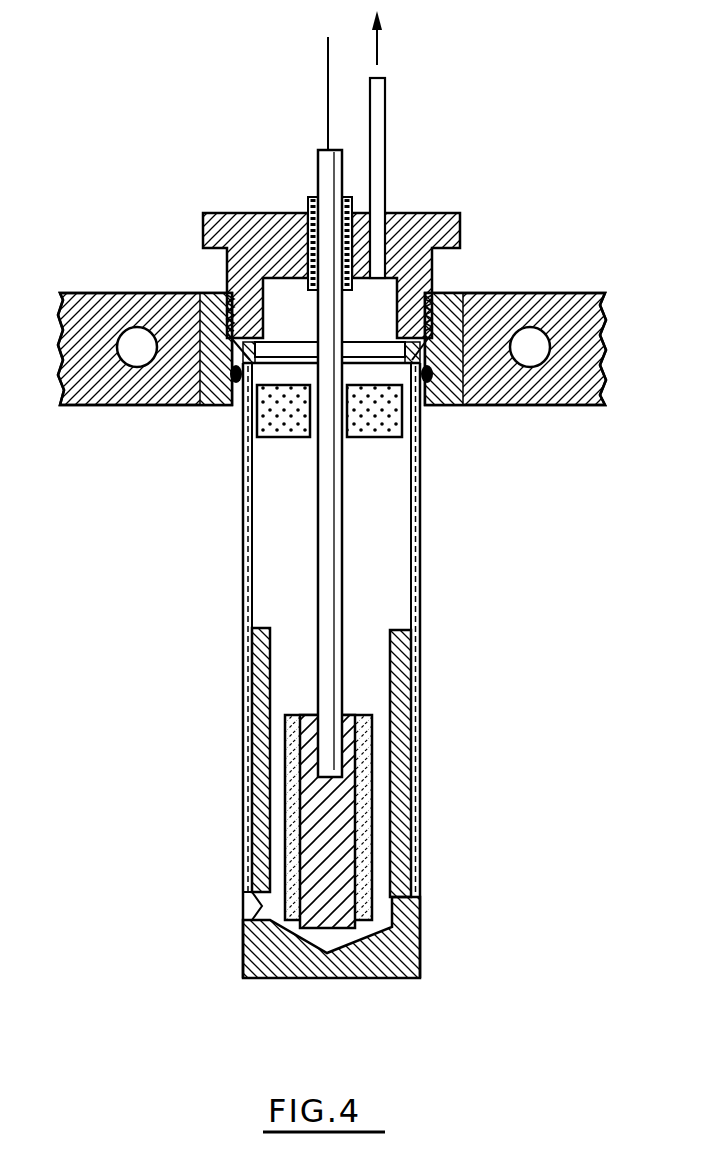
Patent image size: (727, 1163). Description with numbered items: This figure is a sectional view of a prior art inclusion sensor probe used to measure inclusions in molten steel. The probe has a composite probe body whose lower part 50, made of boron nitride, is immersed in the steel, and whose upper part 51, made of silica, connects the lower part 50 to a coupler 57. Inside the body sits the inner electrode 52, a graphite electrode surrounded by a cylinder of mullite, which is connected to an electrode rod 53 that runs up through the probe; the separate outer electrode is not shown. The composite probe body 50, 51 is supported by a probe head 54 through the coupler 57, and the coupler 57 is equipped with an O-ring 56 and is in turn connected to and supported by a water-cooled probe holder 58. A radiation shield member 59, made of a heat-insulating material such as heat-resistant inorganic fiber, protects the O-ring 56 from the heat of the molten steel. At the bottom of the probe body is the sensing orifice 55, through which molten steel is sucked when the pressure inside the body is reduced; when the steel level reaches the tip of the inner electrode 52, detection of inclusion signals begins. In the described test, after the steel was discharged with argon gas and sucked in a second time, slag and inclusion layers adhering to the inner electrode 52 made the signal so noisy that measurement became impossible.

The lower part of probe body 50 is at (415, 778).
The upper part of probe body 51 is at (243, 578).
The inner electrode 52 is at (343, 902).
The electrode rod 53 is at (323, 170).
The probe head 54 is at (443, 218).
The sensing orifice 55 is at (247, 903).
The O-ring 56 is at (223, 402).
The coupler 57 is at (217, 300).
The water-cooled probe holder 58 is at (135, 397).
The radiation shield member 59 is at (270, 442).